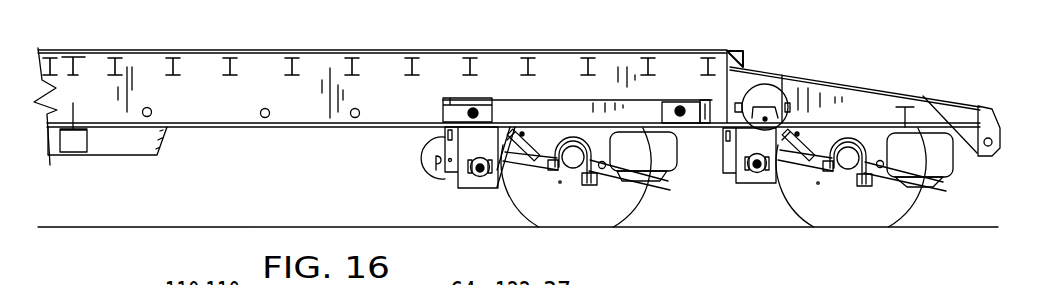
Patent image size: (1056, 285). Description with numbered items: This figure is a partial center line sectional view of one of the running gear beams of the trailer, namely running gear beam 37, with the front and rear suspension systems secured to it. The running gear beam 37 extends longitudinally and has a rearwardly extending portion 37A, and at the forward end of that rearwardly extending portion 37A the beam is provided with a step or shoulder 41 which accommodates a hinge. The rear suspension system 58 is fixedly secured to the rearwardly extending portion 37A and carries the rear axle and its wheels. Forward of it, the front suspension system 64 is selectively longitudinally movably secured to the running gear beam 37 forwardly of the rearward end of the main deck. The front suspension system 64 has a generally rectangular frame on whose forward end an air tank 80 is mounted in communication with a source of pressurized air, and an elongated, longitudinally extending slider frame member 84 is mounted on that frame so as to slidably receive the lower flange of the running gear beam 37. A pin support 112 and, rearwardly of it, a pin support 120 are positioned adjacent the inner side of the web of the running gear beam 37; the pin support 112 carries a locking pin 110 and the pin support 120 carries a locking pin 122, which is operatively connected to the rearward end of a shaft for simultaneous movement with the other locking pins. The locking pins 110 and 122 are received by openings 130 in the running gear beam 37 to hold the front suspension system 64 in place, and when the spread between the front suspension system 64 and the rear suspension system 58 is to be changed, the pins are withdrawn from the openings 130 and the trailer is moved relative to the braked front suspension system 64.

The running gear beam 37 is at (507, 78).
The rearwardly extending portion 37A is at (880, 110).
The step or shoulder 41 is at (742, 53).
The rear suspension system 58 is at (927, 208).
The front suspension system 64 is at (654, 209).
The air tank 80 is at (428, 172).
The slider frame member 84 is at (550, 110).
The locking pin 110 is at (449, 116).
The pin support 112 is at (452, 90).
The pin support 120 is at (716, 90).
The locking pin 122 is at (696, 137).
The openings 130 is at (352, 117).